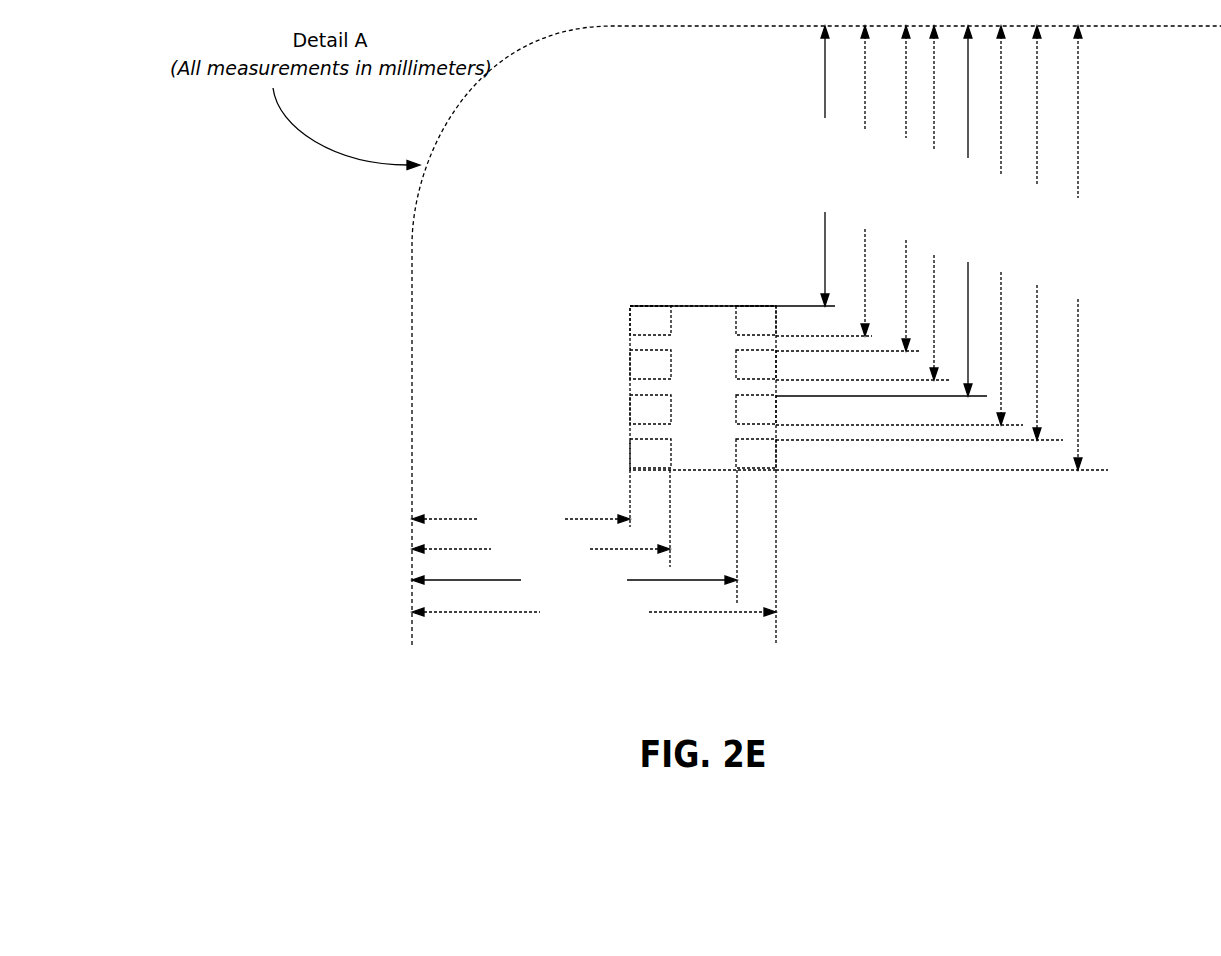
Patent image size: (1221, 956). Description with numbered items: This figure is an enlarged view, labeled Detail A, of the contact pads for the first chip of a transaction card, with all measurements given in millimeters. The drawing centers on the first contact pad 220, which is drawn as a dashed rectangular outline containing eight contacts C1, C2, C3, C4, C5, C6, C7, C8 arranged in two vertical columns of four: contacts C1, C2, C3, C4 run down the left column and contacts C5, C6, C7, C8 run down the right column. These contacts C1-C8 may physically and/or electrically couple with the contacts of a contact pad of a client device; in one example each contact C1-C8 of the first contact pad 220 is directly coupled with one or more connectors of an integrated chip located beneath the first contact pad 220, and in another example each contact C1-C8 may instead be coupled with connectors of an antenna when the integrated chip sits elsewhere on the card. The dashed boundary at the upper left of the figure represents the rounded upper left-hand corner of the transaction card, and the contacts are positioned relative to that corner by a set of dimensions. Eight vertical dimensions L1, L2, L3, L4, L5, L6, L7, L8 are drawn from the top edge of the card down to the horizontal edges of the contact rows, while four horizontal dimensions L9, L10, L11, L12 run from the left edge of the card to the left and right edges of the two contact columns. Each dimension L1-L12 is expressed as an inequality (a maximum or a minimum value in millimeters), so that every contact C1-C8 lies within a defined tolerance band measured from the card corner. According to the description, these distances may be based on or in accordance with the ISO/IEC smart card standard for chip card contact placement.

The first contact pad 220 is at (703, 345).
The contact C1 is at (650, 320).
The contact C2 is at (650, 364).
The contact C3 is at (650, 409).
The contact C4 is at (650, 453).
The contact C5 is at (756, 320).
The contact C6 is at (756, 364).
The contact C7 is at (756, 409).
The contact C8 is at (756, 453).
The dimension L1 is at (807, 166).
The dimension L2 is at (827, 181).
The dimension L3 is at (848, 188).
The dimension L4 is at (863, 203).
The dimension L5 is at (881, 211).
The dimension L6 is at (899, 225).
The dimension L7 is at (919, 233).
The dimension L8 is at (942, 248).
The dimension L9 is at (521, 501).
The dimension L10 is at (541, 518).
The dimension L11 is at (574, 537).
The dimension L12 is at (594, 557).